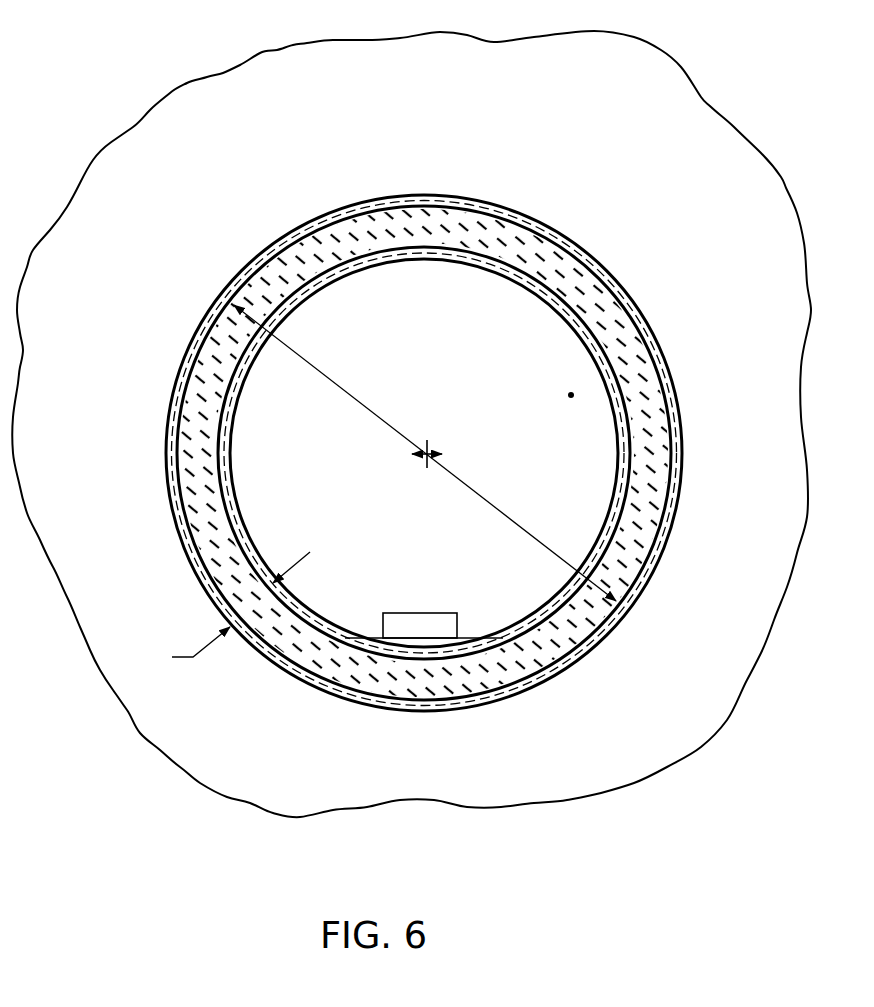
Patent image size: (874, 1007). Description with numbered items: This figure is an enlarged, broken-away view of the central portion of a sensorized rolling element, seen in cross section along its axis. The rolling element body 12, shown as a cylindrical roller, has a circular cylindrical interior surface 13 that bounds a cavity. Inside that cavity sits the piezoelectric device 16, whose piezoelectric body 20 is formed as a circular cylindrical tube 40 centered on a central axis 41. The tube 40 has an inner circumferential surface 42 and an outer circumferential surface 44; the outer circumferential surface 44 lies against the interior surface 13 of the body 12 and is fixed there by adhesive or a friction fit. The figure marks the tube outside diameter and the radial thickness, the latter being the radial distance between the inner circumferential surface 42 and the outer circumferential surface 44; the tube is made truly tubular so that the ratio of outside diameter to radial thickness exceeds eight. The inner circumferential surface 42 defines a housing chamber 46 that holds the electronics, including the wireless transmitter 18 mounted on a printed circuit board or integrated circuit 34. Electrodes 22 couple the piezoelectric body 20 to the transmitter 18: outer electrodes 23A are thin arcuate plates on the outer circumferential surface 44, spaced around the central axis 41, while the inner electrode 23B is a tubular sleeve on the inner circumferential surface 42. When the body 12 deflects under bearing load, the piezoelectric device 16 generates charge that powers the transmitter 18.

The rolling element body 12 is at (411, 424).
The interior surface 13 is at (592, 278).
The piezoelectric device 16 is at (167, 302).
The wireless transmitter 18 is at (398, 622).
The piezoelectric body 20 is at (422, 454).
The electrodes 22 is at (399, 190).
The outer electrodes 23A is at (454, 190).
The inner electrode 23B is at (325, 287).
The printed circuit board or integrated circuit 34 is at (444, 612).
The piezoelectric tube 40 is at (200, 370).
The central axis 41 is at (428, 445).
The inner circumferential surface 42 is at (233, 508).
The outer circumferential surface 44 is at (173, 527).
The housing chamber 46 is at (571, 395).